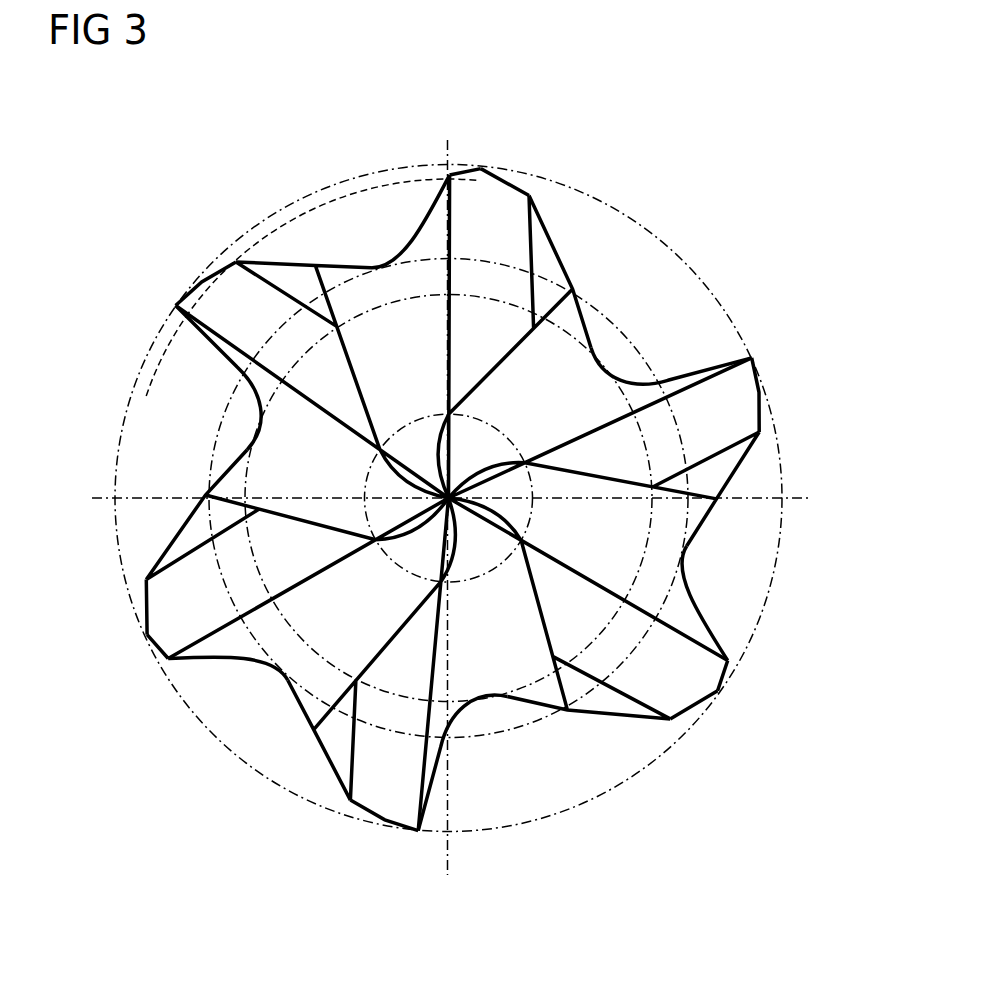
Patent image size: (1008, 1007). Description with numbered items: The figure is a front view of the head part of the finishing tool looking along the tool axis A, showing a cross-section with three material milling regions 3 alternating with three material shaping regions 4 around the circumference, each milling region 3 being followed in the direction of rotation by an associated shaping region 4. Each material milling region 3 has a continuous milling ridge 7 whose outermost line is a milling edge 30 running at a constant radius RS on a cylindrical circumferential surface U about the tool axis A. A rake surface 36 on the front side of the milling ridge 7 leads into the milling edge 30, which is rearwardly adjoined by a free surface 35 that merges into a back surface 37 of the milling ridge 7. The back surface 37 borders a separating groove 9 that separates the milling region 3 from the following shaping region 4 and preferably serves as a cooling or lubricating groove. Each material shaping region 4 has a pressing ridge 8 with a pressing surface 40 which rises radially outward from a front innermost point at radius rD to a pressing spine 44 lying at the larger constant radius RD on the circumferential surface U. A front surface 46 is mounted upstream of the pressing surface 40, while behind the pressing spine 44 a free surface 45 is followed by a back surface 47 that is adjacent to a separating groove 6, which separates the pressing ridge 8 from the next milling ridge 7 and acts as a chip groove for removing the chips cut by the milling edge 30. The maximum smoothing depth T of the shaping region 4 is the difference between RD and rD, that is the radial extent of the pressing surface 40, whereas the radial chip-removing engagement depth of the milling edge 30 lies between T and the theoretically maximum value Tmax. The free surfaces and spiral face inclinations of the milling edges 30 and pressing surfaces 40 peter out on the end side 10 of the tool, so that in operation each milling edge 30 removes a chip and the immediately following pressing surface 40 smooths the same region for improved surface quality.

The material milling region 3 is at (186, 283).
The material shaping region 4 is at (531, 193).
The separating groove 6 is at (230, 448).
The milling ridge 7 is at (237, 297).
The pressing ridge 8 is at (498, 203).
The separating groove 9 is at (322, 246).
The end side 10 is at (253, 663).
The milling edge 30 is at (178, 306).
The free surface 35 is at (187, 273).
The rake surface 36 is at (709, 362).
The back surface 37 is at (270, 262).
The pressing surface 40 is at (733, 670).
The pressing spine 44 is at (479, 166).
The free surface 45 is at (520, 184).
The front surface 46 is at (432, 203).
The back surface 47 is at (560, 240).
The maximum smoothing depth T is at (394, 168).
The theoretically maximum chip-removing engagement depth Tmax is at (380, 266).
The cylindrical circumferential surface U is at (120, 441).
The tool axis A is at (450, 500).
The radius of the front innermost point of the pressing surface rD is at (400, 186).
The radius of the pressing spine RD is at (480, 172).
The radius of the milling edge RS is at (448, 498).